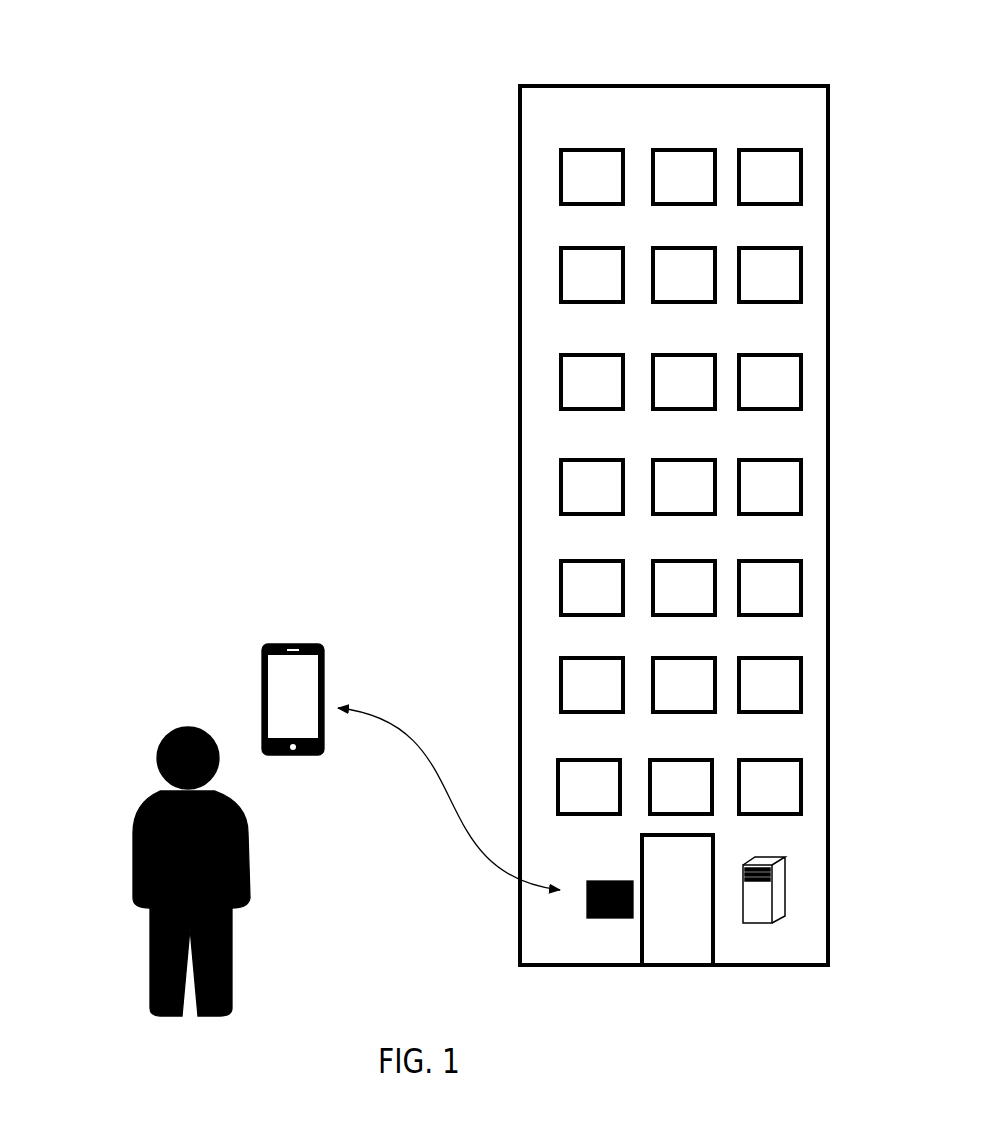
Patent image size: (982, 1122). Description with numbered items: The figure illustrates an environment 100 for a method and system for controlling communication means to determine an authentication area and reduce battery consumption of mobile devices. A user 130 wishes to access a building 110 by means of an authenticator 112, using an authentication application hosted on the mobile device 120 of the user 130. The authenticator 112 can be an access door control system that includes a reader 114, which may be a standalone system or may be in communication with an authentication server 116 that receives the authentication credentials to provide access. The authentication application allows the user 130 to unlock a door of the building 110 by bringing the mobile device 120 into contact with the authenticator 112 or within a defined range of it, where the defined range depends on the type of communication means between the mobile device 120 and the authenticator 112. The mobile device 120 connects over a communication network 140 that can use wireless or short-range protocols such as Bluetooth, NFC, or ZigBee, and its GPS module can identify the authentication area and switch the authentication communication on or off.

The environment 100 is at (742, 29).
The building 110 is at (502, 172).
The authenticator 112 is at (557, 906).
The reader 114 is at (609, 945).
The authentication server 116 is at (758, 938).
The mobile device 120 is at (253, 605).
The user 130 is at (140, 762).
The communication network 140 is at (428, 722).